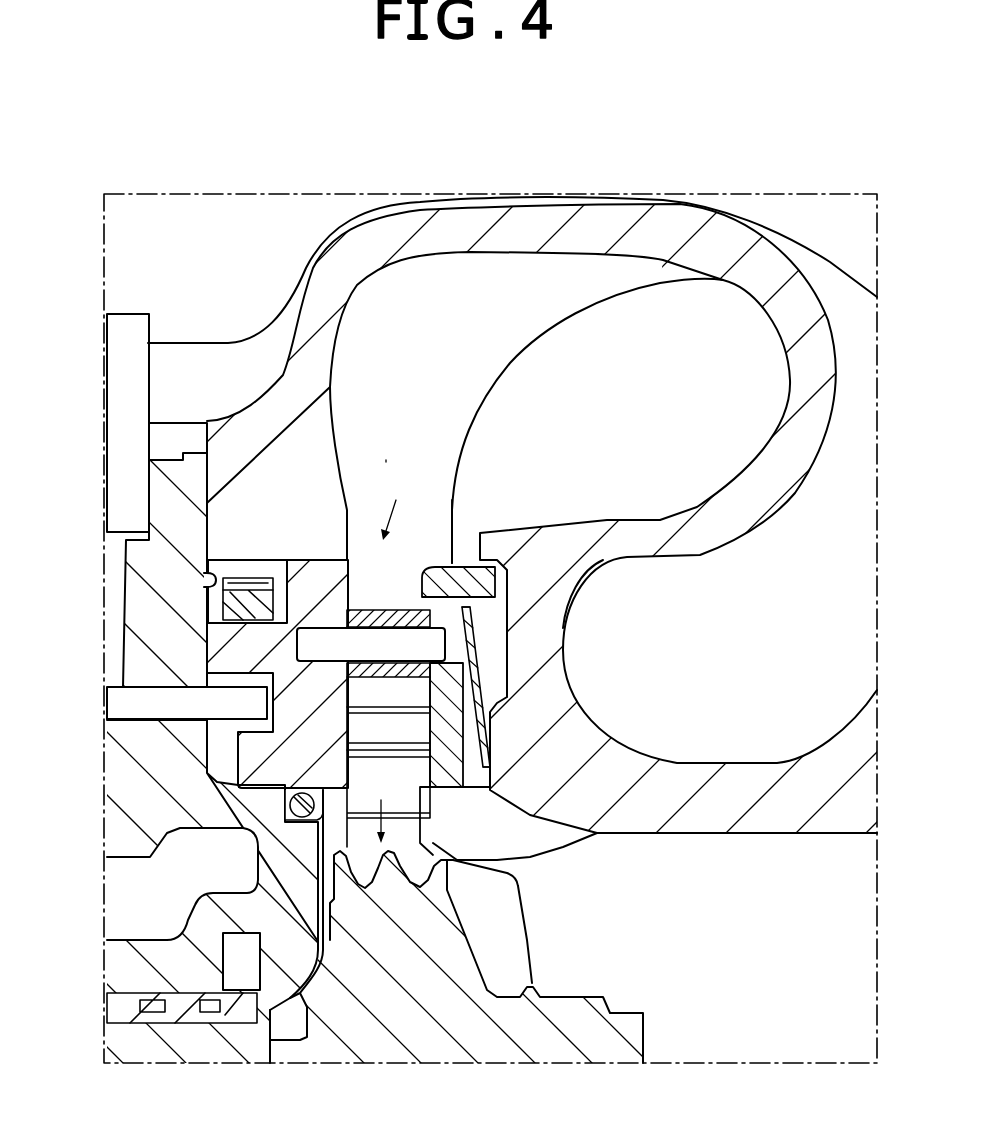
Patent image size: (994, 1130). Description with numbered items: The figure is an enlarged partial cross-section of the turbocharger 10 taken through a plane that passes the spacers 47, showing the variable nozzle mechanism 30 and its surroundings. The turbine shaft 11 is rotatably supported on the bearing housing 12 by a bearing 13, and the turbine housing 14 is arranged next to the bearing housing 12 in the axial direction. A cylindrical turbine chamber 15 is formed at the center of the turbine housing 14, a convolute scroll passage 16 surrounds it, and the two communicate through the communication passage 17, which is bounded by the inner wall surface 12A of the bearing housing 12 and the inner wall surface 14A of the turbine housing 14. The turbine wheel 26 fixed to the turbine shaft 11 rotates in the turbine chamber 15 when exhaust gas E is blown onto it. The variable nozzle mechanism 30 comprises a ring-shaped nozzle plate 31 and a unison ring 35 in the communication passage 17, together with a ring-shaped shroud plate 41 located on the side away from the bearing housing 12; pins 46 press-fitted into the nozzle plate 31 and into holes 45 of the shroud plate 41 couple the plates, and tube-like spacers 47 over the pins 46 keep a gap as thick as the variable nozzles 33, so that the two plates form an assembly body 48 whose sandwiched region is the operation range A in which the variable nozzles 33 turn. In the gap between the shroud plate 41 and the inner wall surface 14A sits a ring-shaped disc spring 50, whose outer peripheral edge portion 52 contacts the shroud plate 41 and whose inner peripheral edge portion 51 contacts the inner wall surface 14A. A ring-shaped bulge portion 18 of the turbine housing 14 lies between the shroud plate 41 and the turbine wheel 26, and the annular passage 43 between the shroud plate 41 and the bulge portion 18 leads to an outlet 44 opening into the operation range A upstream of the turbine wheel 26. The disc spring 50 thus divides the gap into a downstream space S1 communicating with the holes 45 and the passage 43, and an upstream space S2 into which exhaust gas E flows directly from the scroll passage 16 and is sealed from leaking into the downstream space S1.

The turbocharger 10 is at (238, 187).
The turbine shaft 11 is at (291, 1007).
The bearing housing 12 is at (138, 606).
The inner wall surface 12A is at (204, 576).
The bearing 13 is at (107, 1005).
The turbine housing 14 is at (797, 262).
The inner wall surface 14A is at (500, 630).
The turbine chamber 15 is at (512, 944).
The scroll passage 16 is at (646, 418).
The communication passage 17 is at (394, 596).
The bulge portion 18 is at (457, 852).
The turbine wheel 26 is at (531, 946).
The variable nozzle mechanism 30 is at (403, 416).
The nozzle plate 31 is at (322, 577).
The variable nozzles 33 is at (350, 823).
The unison ring 35 is at (246, 592).
The shroud plate 41 is at (437, 580).
The passage 43 is at (463, 937).
The outlet 44 is at (396, 818).
The holes 45 is at (447, 605).
The pins 46 is at (403, 650).
The spacers 47 is at (388, 728).
The assembly body 48 is at (386, 456).
The disc spring 50 is at (488, 703).
The inner peripheral edge portion 51 is at (491, 775).
The outer peripheral edge portion 52 is at (503, 617).
The operation range A is at (372, 795).
The exhaust gas E is at (396, 500).
The downstream space S1 is at (500, 848).
The upstream space S2 is at (490, 645).